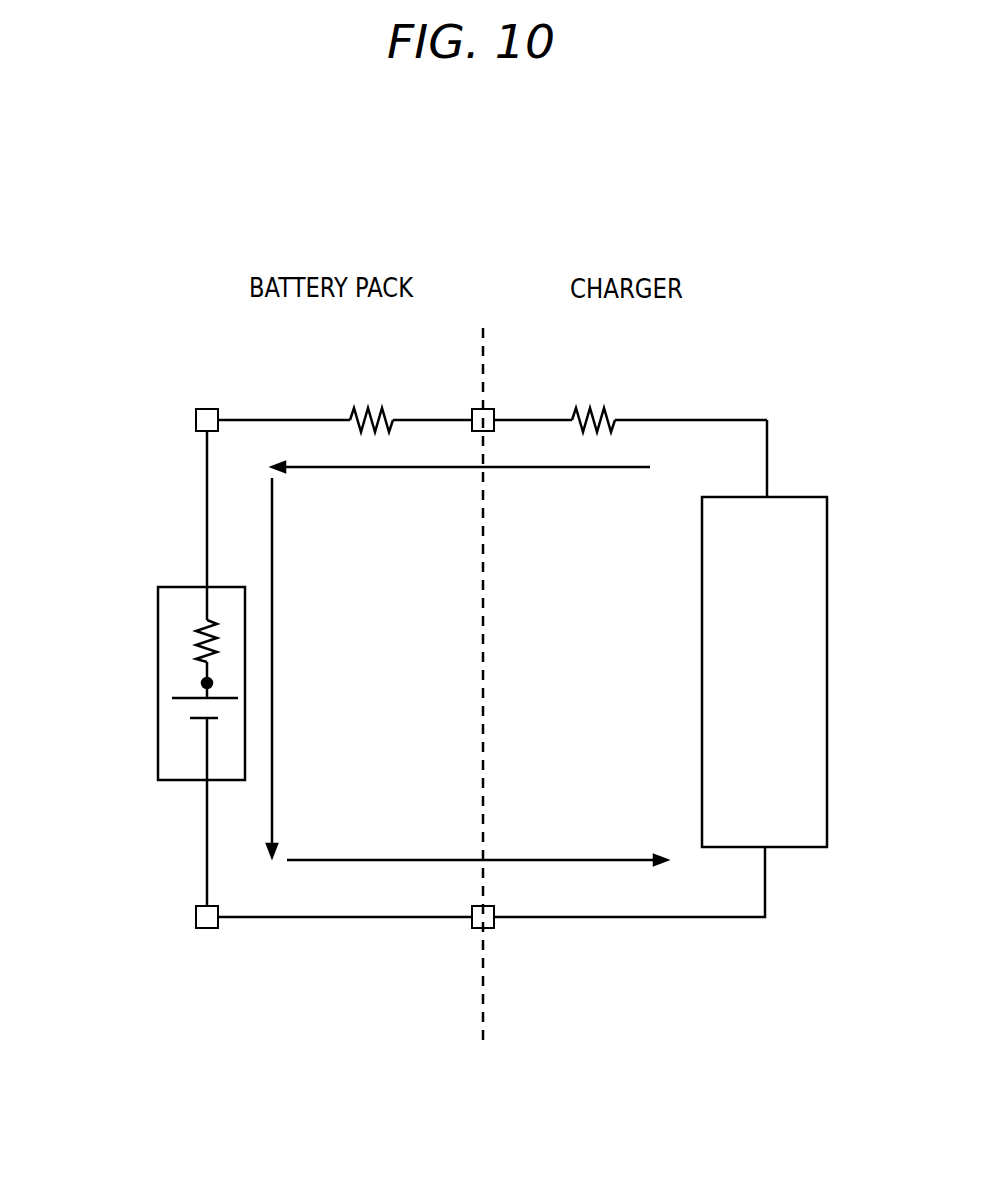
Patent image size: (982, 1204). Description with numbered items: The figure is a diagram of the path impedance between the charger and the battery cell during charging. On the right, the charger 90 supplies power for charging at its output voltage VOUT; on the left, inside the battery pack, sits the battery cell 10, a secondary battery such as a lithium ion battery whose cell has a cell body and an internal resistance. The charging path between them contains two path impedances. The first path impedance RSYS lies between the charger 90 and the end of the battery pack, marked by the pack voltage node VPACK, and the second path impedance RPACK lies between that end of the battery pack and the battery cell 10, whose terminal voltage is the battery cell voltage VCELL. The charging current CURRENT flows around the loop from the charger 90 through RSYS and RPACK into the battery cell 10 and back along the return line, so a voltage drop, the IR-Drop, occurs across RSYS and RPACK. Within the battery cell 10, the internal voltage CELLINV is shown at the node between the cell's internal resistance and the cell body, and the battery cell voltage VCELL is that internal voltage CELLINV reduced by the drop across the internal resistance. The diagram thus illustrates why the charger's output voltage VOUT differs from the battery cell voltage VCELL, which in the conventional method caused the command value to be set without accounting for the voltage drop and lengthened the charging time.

The battery cell 10 is at (143, 716).
The charger 90 is at (778, 847).
The battery cell voltage VCELL is at (211, 402).
The pack voltage node VPACK is at (449, 385).
The second path impedance RPACK is at (375, 402).
The first path impedance RSYS is at (600, 402).
The output voltage VOUT is at (737, 458).
The output current CURRENT is at (467, 663).
The internal voltage CELLINV is at (200, 683).